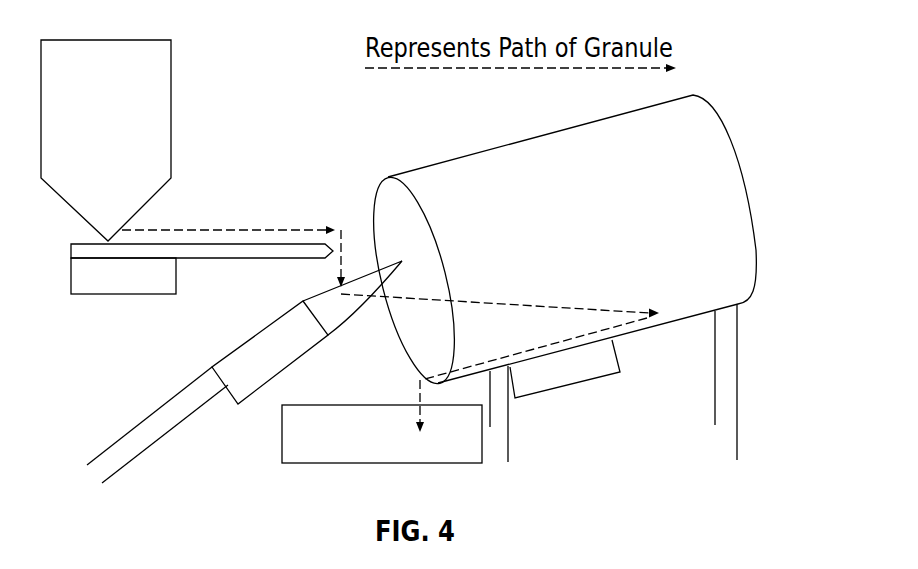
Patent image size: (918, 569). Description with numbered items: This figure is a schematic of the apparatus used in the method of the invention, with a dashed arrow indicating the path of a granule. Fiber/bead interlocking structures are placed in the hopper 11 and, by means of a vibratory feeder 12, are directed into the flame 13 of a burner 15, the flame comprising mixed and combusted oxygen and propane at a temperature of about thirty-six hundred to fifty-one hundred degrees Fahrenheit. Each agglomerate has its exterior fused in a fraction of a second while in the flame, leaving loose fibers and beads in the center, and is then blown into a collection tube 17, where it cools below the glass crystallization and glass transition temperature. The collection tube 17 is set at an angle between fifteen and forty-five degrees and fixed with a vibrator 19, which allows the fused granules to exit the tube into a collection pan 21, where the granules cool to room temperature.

The hopper 11 is at (149, 37).
The vibratory feeder 12 is at (252, 256).
The flame 13 is at (363, 307).
The burner 15 is at (315, 345).
The collection tube 17 is at (748, 202).
The vibrator 19 is at (592, 378).
The collection pan 21 is at (450, 463).